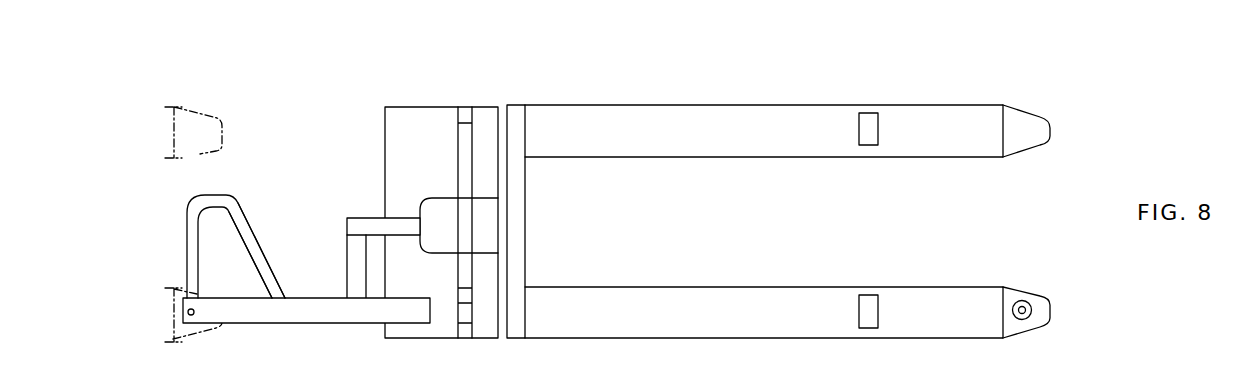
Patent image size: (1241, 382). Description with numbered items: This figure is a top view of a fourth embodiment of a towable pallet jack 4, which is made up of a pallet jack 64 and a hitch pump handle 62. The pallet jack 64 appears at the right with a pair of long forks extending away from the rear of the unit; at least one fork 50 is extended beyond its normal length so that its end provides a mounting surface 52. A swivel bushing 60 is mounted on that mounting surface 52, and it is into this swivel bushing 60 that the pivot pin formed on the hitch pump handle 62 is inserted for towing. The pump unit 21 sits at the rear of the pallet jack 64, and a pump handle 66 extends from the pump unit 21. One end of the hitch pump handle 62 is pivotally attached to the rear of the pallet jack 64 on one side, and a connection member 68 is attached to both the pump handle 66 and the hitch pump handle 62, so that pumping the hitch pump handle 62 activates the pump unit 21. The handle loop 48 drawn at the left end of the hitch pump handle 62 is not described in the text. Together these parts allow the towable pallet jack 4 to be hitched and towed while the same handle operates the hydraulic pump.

The towable pallet jack 4 is at (930, 87).
The pump unit 21 is at (452, 218).
The handle loop 48 is at (232, 195).
The fork 50 is at (768, 319).
The mounting surface 52 is at (1035, 298).
The swivel bushing 60 is at (1025, 315).
The hitch pump handle 62 is at (313, 295).
The pallet jack 64 is at (639, 66).
The pump handle 66 is at (375, 228).
The connection member 68 is at (358, 270).